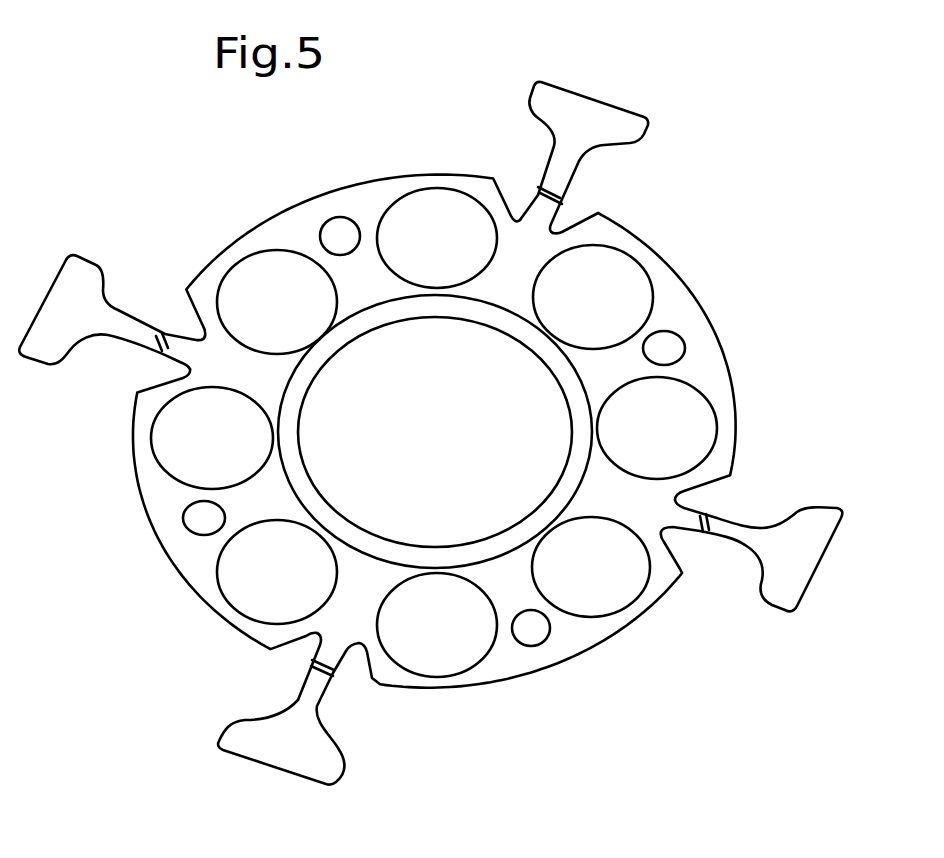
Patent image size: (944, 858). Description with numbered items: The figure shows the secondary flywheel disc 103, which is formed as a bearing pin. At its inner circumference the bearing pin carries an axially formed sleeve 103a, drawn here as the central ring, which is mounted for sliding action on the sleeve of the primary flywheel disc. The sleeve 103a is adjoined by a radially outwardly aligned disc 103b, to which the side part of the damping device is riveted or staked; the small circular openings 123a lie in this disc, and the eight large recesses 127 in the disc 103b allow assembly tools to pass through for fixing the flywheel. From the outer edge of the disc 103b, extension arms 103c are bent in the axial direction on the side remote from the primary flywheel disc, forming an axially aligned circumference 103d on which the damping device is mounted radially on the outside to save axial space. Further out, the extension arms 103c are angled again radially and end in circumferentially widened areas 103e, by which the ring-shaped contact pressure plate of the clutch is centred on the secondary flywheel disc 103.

The secondary flywheel disc 103 is at (740, 192).
The sleeve 103a is at (537, 340).
The disc 103b is at (667, 290).
The extension arms 103c is at (738, 538).
The axially aligned circumference 103d is at (712, 517).
The widened areas 103e is at (827, 522).
The small hole 123a is at (672, 343).
The recesses 127 is at (687, 407).